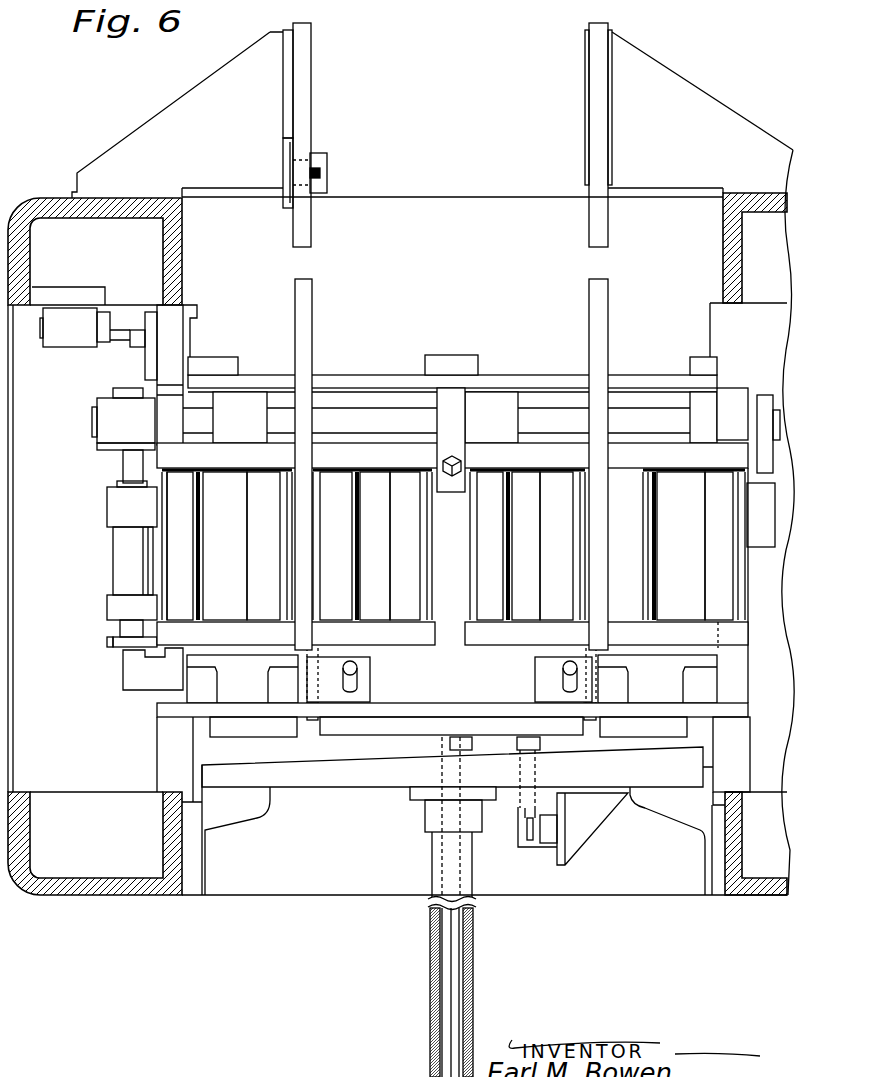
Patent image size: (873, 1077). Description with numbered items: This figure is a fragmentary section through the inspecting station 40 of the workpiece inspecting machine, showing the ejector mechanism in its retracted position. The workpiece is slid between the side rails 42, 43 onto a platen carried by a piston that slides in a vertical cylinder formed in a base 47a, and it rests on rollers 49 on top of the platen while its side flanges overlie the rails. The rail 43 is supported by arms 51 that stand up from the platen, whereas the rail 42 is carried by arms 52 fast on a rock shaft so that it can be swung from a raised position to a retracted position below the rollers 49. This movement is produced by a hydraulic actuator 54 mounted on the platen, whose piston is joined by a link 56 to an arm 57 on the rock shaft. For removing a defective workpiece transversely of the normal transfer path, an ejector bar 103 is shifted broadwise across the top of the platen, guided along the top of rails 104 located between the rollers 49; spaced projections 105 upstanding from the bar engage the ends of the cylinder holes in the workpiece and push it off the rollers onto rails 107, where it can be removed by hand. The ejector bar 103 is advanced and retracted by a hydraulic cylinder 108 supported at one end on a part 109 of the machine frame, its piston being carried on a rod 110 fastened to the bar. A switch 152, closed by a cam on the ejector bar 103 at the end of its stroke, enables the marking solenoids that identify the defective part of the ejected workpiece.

The inspecting station 40 is at (272, 878).
The side rail 42 is at (385, 376).
The side rail 43 is at (162, 705).
The base 47a is at (325, 896).
The rollers 49 is at (252, 508).
The arms 51 is at (227, 737).
The arms 52 is at (230, 358).
The hydraulic actuator 54 is at (118, 562).
The link 56 is at (128, 388).
The arm 57 is at (113, 396).
The ejector bar 103 is at (345, 735).
The rails 104 is at (308, 333).
The projections 105 is at (357, 672).
The rails 107 is at (304, 113).
The cylinder 108 is at (440, 903).
The part of the inspecting machine frame 109 is at (355, 782).
The rod 110 is at (463, 746).
The switch 152 is at (329, 162).